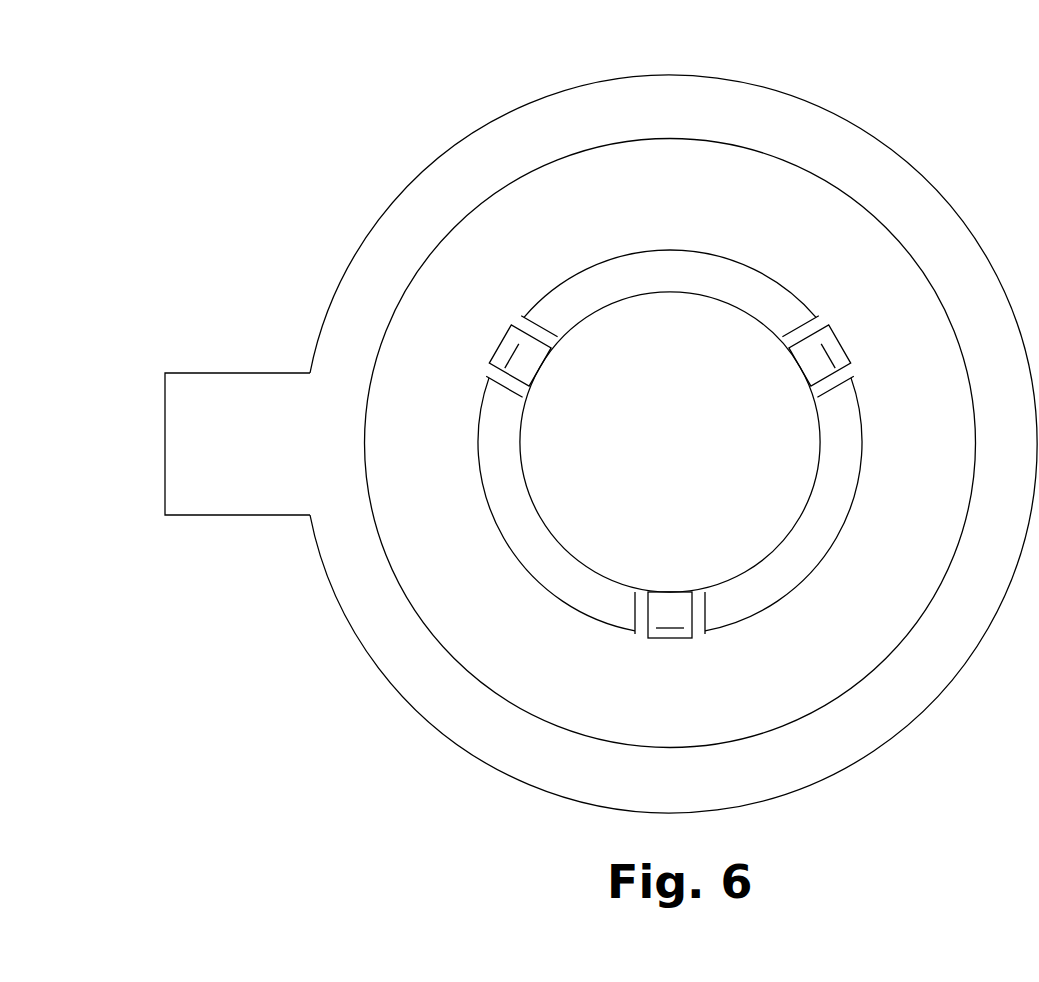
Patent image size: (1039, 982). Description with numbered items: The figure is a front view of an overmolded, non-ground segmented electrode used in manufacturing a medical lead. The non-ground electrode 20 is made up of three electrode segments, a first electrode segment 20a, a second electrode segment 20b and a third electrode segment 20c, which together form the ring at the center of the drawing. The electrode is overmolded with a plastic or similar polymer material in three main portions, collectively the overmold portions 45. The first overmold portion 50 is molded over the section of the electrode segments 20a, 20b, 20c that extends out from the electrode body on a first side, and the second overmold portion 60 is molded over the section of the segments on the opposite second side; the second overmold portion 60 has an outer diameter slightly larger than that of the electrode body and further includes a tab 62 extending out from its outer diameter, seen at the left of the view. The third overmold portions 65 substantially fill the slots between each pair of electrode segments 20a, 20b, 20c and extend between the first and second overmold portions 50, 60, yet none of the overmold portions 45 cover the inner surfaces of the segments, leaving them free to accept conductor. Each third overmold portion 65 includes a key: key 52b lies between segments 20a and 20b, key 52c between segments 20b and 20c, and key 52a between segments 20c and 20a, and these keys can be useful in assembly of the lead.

The non-ground electrode 20 is at (820, 65).
The first electrode segment 20a is at (658, 290).
The second electrode segment 20b is at (542, 548).
The third electrode segment 20c is at (808, 520).
The overmold portions 45 is at (554, 87).
The first overmold portion 50 is at (470, 645).
The key 52a is at (820, 355).
The key 52b is at (520, 355).
The key 52c is at (670, 615).
The second overmold portion 60 is at (462, 155).
The tab 62 is at (233, 398).
The third overmold portions 65 is at (557, 338).